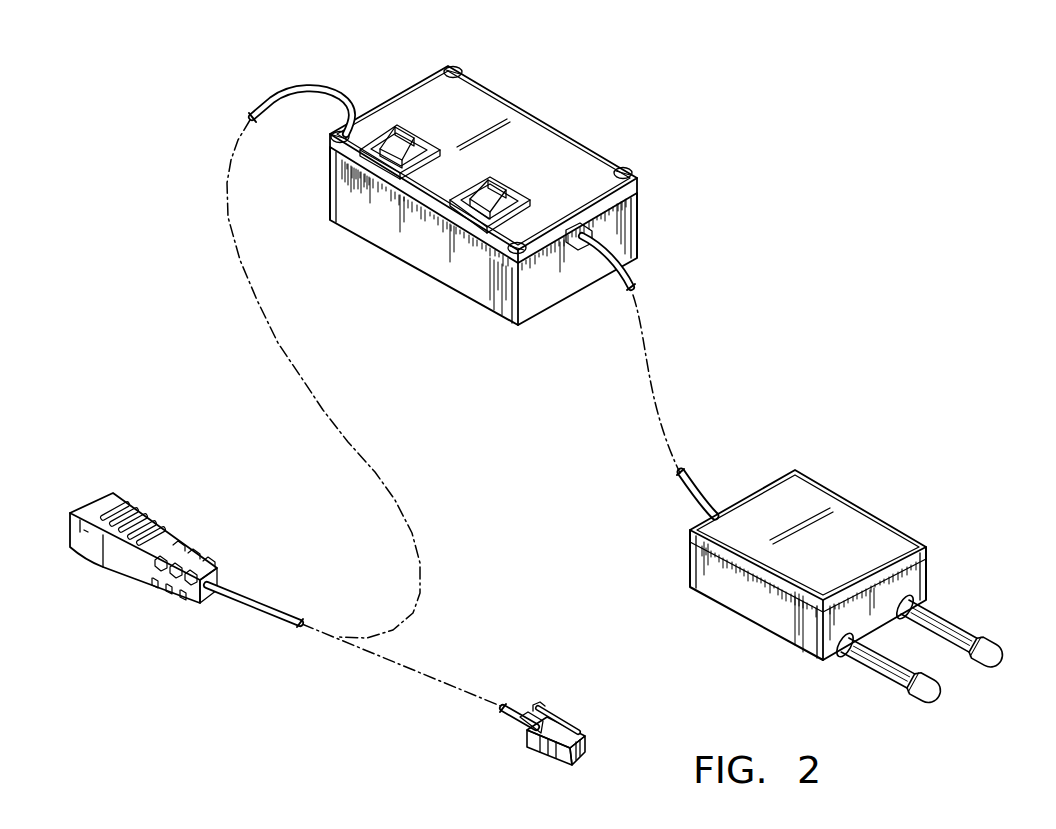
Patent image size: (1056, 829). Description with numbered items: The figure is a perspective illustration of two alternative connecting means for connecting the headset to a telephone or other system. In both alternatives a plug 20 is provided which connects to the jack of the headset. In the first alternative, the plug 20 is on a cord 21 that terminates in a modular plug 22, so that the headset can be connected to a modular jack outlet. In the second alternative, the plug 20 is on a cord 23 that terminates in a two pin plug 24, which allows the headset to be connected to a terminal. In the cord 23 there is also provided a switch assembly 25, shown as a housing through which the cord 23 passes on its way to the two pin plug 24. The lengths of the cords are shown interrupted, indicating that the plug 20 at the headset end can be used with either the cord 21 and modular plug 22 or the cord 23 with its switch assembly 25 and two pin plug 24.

The plug 20 is at (177, 535).
The cord 21 is at (510, 705).
The modular plug 22 is at (530, 743).
The cord 23 is at (707, 493).
The two pin plug 24 is at (853, 523).
The switch assembly 25 is at (345, 97).